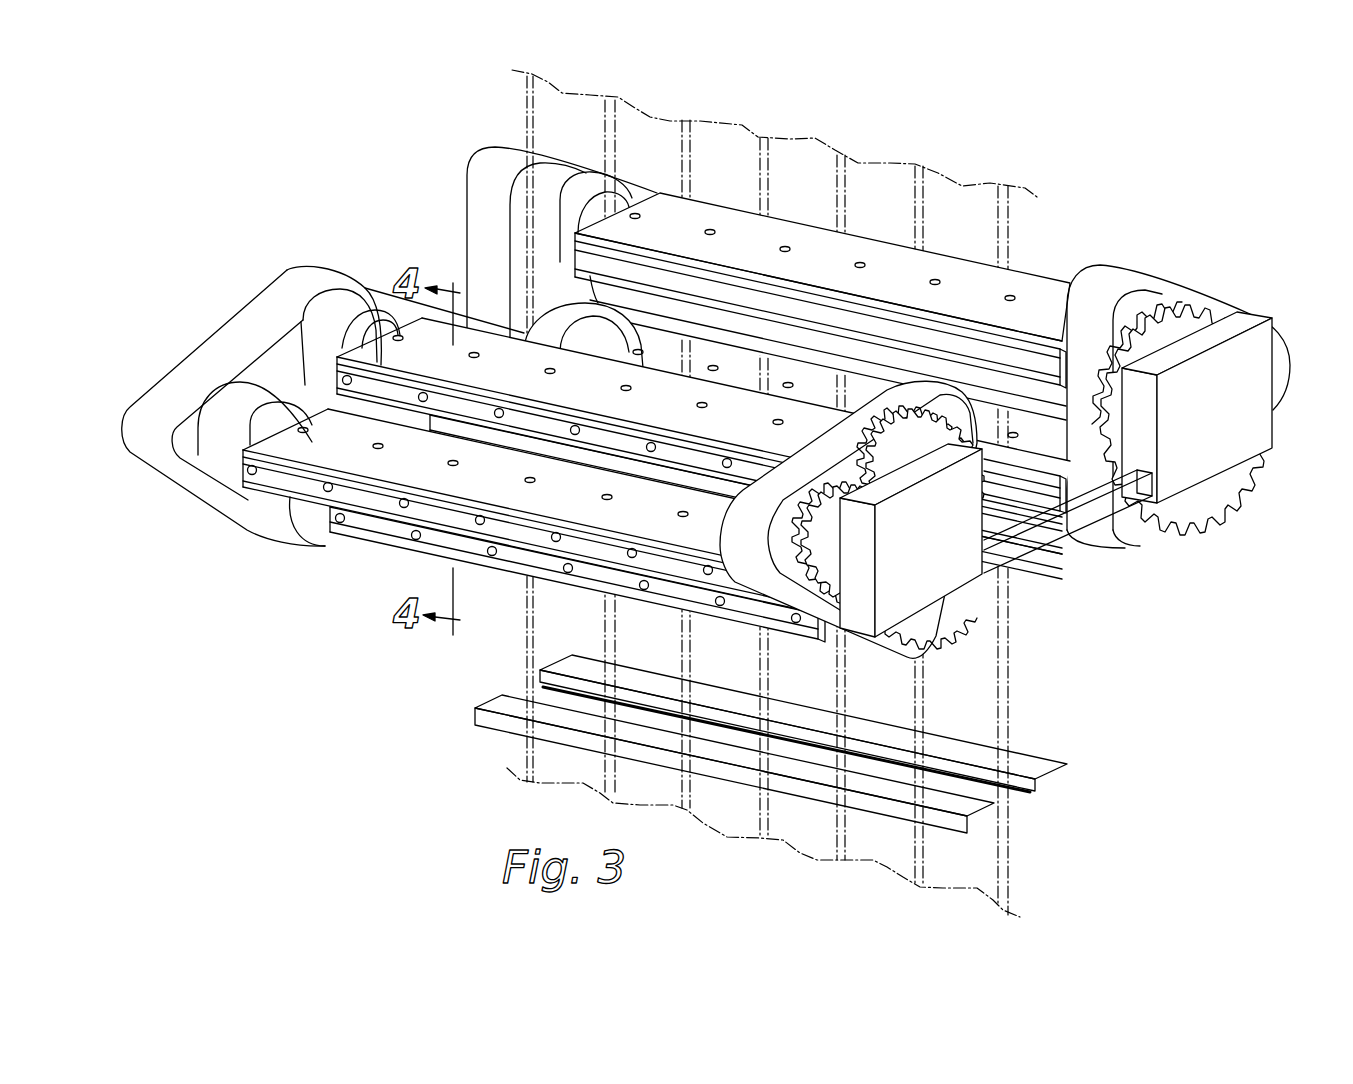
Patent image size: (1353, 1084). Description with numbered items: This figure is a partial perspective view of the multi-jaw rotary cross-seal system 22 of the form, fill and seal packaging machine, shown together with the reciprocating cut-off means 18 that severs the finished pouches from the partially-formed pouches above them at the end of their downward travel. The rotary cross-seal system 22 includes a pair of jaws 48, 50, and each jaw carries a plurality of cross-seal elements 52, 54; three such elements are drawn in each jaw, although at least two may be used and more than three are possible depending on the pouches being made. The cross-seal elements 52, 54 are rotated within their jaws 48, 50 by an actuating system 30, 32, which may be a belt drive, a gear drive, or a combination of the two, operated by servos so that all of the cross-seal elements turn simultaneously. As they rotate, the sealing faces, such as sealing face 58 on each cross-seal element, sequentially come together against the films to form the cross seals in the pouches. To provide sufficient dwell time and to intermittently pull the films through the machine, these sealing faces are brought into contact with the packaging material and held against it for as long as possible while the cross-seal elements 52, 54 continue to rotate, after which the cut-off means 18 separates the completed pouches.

The cut-off means 18 is at (514, 726).
The rotary cross-seal system 22 is at (706, 396).
The actuating system 30 is at (741, 560).
The actuating system 32 is at (1213, 299).
The jaw 48 is at (963, 568).
The jaw 50 is at (1218, 452).
The cross-seal element 52 is at (383, 347).
The cross-seal element 54 is at (565, 343).
The sealing face 58 is at (742, 295).